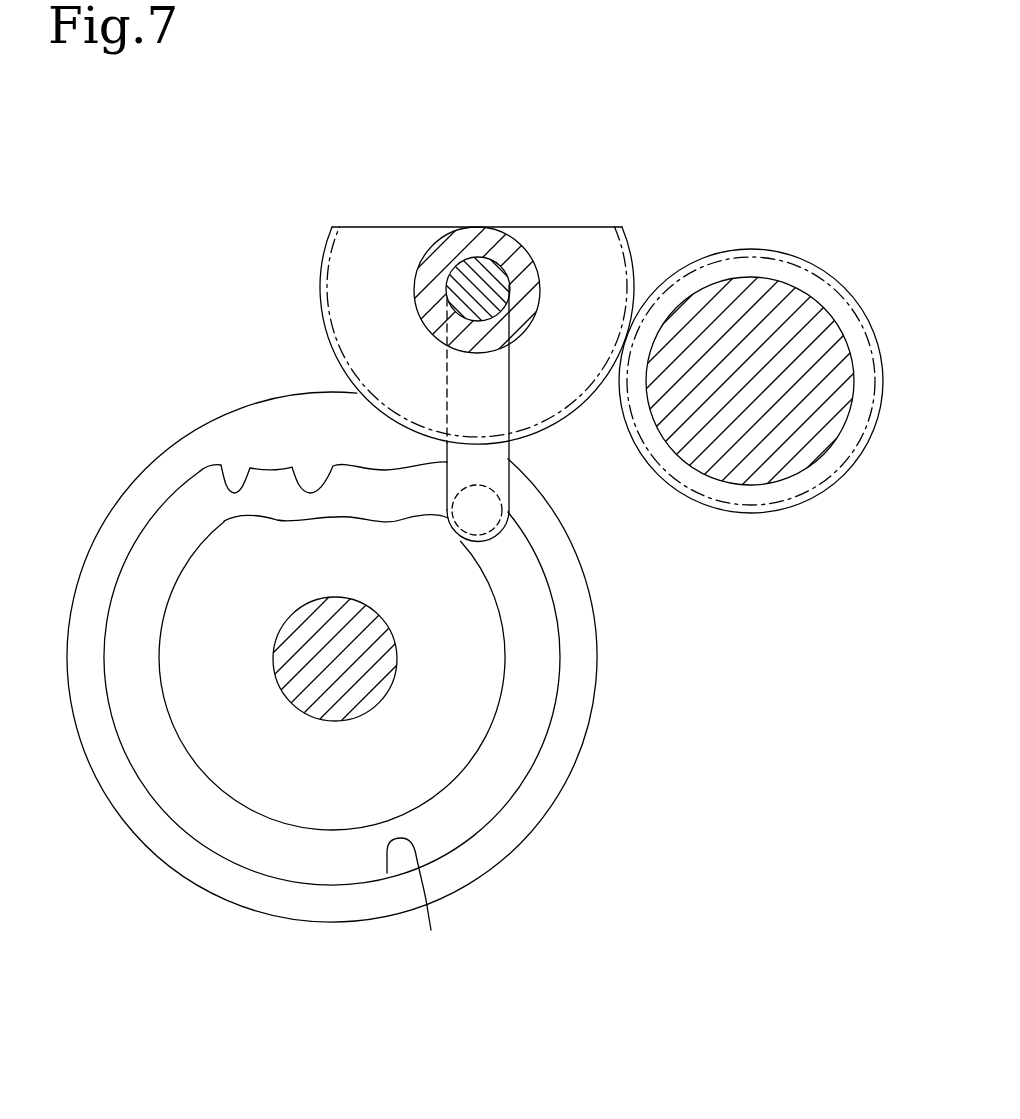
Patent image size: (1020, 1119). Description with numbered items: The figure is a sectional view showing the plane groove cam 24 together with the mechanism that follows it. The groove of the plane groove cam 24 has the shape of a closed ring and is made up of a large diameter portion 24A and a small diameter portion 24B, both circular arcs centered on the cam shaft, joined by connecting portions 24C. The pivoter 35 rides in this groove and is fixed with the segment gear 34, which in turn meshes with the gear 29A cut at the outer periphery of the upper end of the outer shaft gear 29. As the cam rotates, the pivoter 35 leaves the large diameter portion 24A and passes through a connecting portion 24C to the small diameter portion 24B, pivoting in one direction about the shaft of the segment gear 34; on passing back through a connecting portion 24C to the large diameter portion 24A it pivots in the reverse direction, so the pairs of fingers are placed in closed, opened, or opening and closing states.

The plane groove cam 24 is at (558, 716).
The large diameter portion 24A is at (434, 905).
The small diameter portion 24B is at (292, 467).
The connecting portions 24C is at (203, 467).
The outer shaft gear 29 is at (725, 339).
The gear 29A is at (838, 285).
The segment gear 34 is at (587, 235).
The pivoter 35 is at (490, 486).